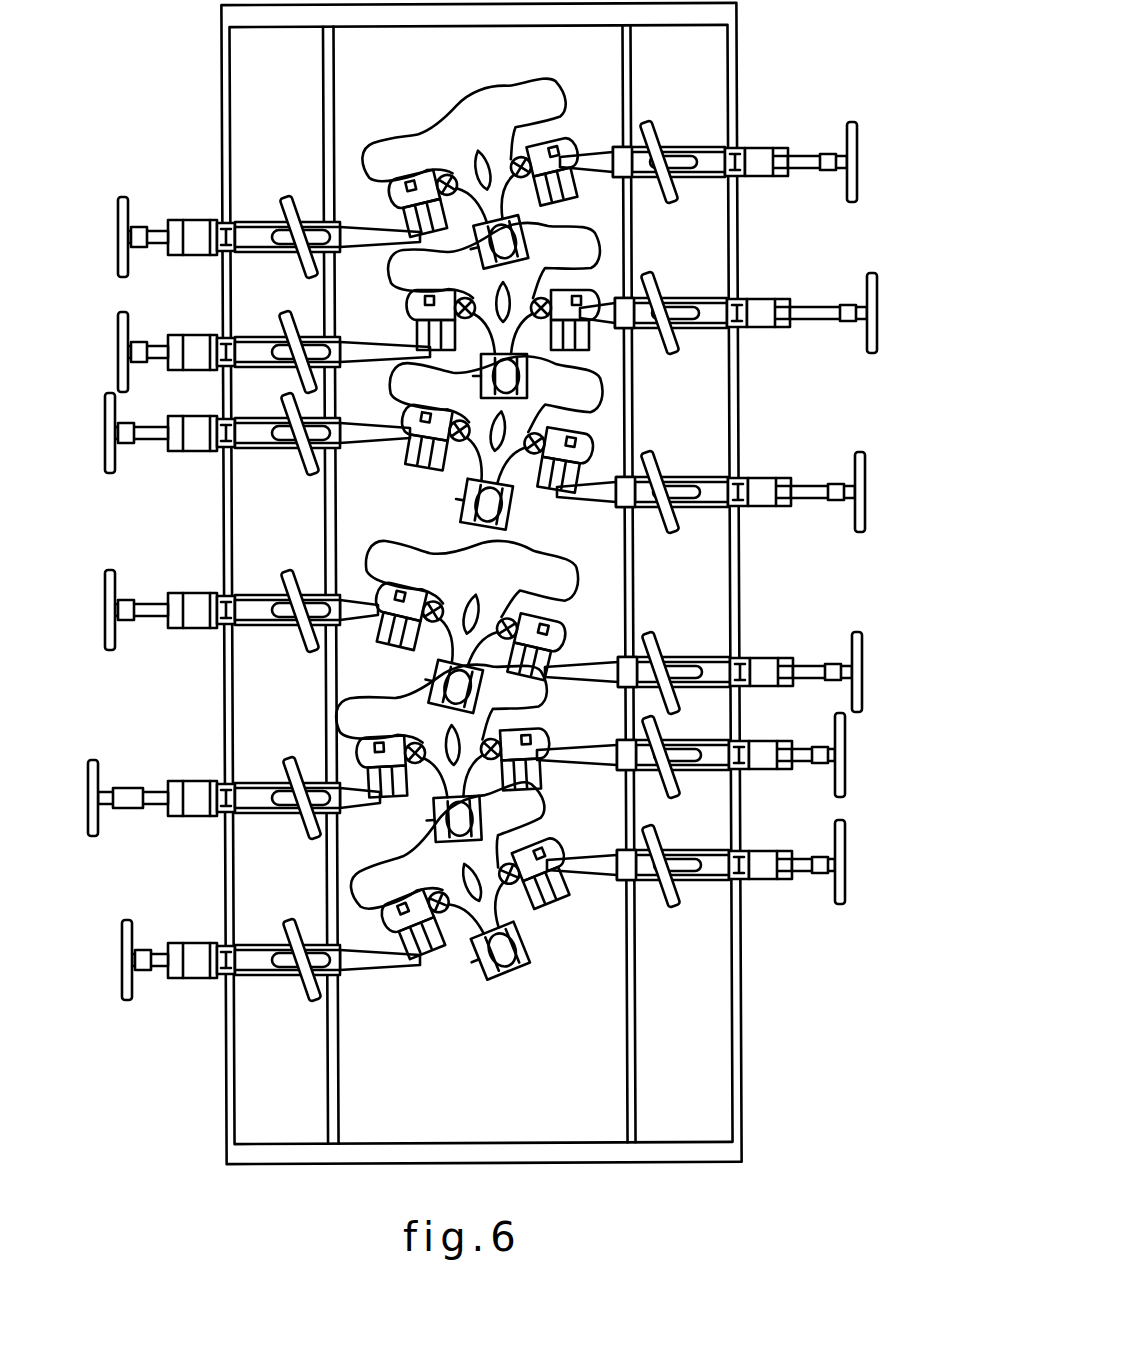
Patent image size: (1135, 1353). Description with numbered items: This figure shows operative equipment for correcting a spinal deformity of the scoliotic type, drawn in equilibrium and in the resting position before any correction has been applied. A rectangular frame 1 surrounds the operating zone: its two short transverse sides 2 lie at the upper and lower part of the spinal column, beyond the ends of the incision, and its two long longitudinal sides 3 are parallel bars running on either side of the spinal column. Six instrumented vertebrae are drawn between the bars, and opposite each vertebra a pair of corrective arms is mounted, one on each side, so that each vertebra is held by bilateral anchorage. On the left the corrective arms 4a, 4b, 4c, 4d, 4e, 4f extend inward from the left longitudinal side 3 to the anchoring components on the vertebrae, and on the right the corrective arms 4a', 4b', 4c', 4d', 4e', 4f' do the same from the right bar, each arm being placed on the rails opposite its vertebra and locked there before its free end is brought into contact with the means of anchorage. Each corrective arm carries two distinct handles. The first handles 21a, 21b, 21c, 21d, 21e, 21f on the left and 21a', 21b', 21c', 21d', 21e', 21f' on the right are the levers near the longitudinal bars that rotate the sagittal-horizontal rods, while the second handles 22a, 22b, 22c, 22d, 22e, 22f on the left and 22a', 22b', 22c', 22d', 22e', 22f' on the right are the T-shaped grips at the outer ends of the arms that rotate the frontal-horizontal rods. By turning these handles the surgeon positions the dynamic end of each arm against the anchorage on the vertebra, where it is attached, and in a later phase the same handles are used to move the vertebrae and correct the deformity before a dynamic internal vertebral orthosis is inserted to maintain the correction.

The frame 1 is at (406, 583).
The short transverse side 2 is at (529, 589).
The long longitudinal side 3 is at (745, 583).
The corrective arm 4a is at (274, 177).
The corrective arm 4b is at (279, 319).
The corrective arm 4c is at (262, 483).
The corrective arm 4d is at (246, 661).
The corrective arm 4e is at (239, 845).
The corrective arm 4f is at (276, 1023).
The corrective arm 4a' is at (703, 112).
The corrective arm 4b' is at (723, 270).
The corrective arm 4c' is at (706, 438).
The corrective arm 4d' is at (698, 617).
The corrective arm 4e' is at (686, 788).
The corrective arm 4f' is at (691, 913).
The handle 21a is at (280, 198).
The handle 21b is at (280, 331).
The handle 21c is at (284, 470).
The handle 21d is at (284, 647).
The handle 21e is at (284, 824).
The handle 21f is at (287, 992).
The handle 21a' is at (682, 120).
The handle 21b' is at (681, 278).
The handle 21c' is at (680, 449).
The handle 21d' is at (684, 634).
The handle 21e' is at (693, 781).
The handle 21f' is at (681, 900).
The handle 22a is at (108, 209).
The handle 22b is at (91, 330).
The handle 22c is at (82, 465).
The handle 22d is at (77, 646).
The handle 22e is at (73, 825).
The handle 22f is at (92, 1002).
The handle 22a' is at (892, 104).
The handle 22b' is at (907, 281).
The handle 22c' is at (893, 455).
The handle 22d' is at (892, 635).
The handle 22e' is at (885, 755).
The handle 22f' is at (882, 862).